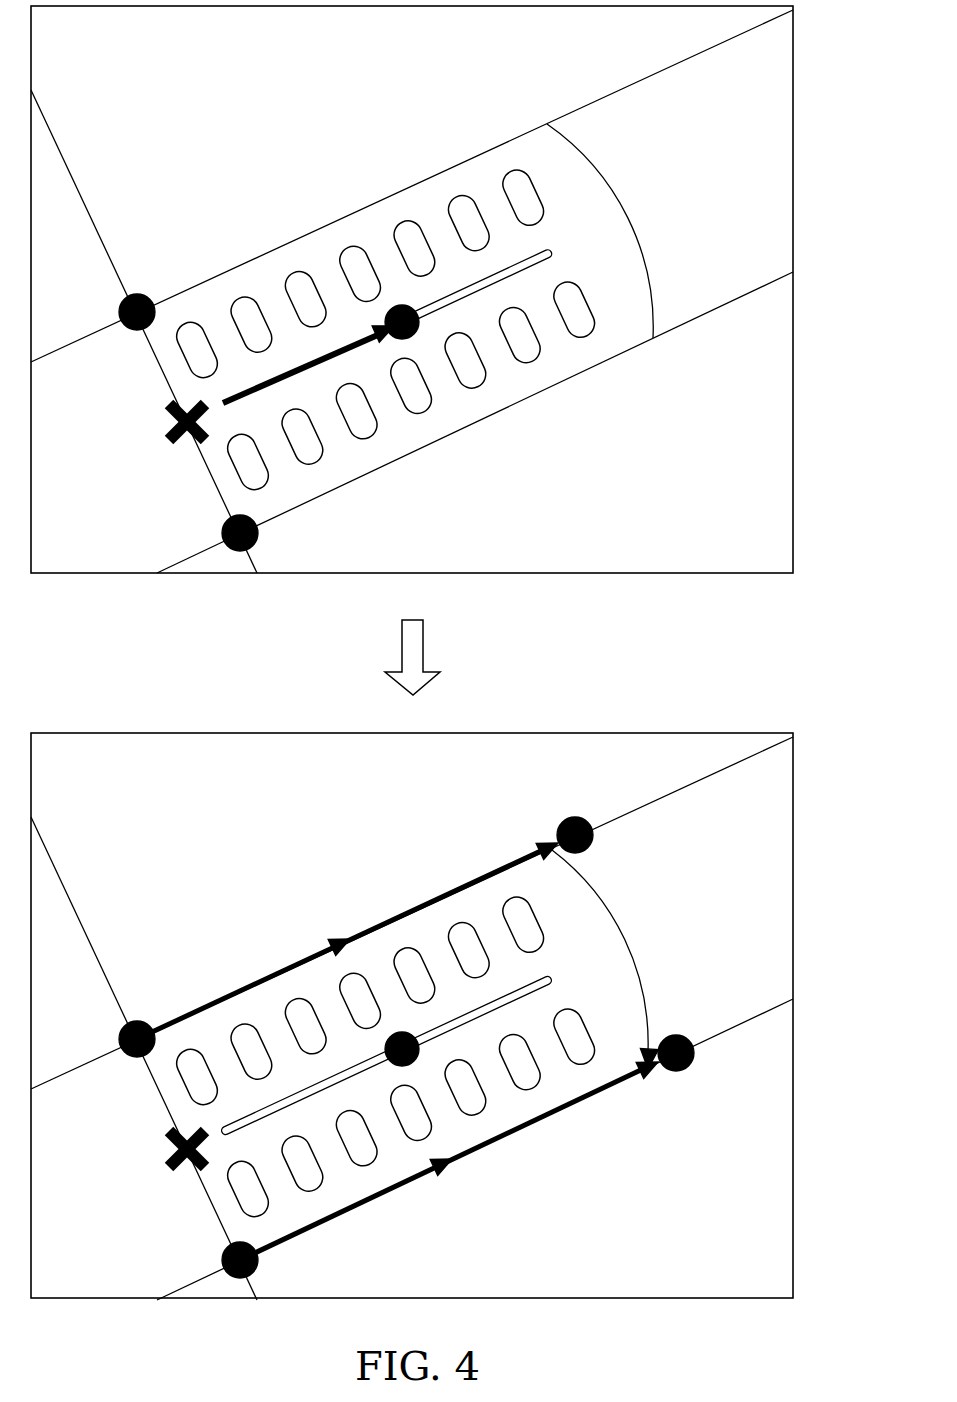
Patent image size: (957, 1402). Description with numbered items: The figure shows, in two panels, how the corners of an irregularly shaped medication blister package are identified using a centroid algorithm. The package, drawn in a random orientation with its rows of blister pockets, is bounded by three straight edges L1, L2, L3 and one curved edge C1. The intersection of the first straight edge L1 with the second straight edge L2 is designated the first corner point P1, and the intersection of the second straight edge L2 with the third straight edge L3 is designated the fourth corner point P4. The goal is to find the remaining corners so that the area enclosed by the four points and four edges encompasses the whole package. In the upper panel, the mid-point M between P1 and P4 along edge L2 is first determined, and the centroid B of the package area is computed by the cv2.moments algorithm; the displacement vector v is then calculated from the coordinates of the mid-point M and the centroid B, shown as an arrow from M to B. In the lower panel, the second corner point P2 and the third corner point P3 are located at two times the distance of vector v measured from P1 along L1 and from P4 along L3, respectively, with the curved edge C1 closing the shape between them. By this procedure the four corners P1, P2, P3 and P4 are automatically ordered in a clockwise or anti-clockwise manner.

The first straight edge L1 is at (412, 549).
The second straight edge L2 is at (144, 675).
The third straight edge L3 is at (453, 786).
The first corner point P1 is at (143, 657).
The second corner point P2 is at (581, 815).
The third corner point P3 is at (695, 1061).
The fourth corner point P4 is at (259, 904).
The centroid B is at (386, 692).
The mid-point M is at (168, 788).
The curved edge C1 is at (611, 630).
The displacement vector v is at (397, 793).